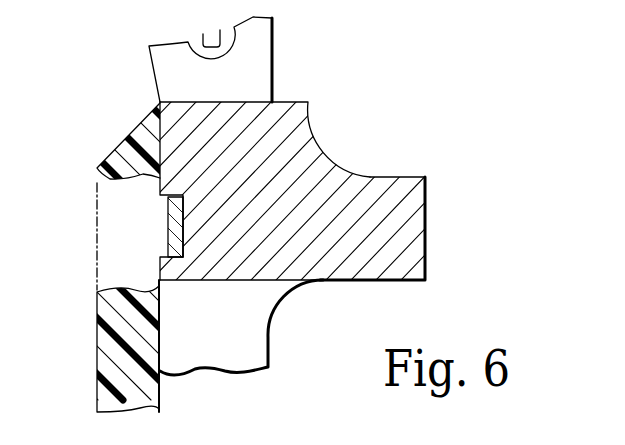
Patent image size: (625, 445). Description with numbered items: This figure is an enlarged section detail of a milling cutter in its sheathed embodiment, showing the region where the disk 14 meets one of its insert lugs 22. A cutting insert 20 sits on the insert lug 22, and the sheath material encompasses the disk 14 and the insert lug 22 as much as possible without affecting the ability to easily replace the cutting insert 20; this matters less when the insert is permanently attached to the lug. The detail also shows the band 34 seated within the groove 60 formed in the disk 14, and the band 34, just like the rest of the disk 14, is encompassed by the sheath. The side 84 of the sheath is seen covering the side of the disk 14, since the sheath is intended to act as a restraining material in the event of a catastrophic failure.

The disk 14 is at (393, 176).
The cutting insert 20 is at (273, 40).
The insert lug 22 is at (310, 115).
The band 34 is at (158, 231).
The groove 60 is at (166, 200).
The side of the sheath 84 is at (97, 350).